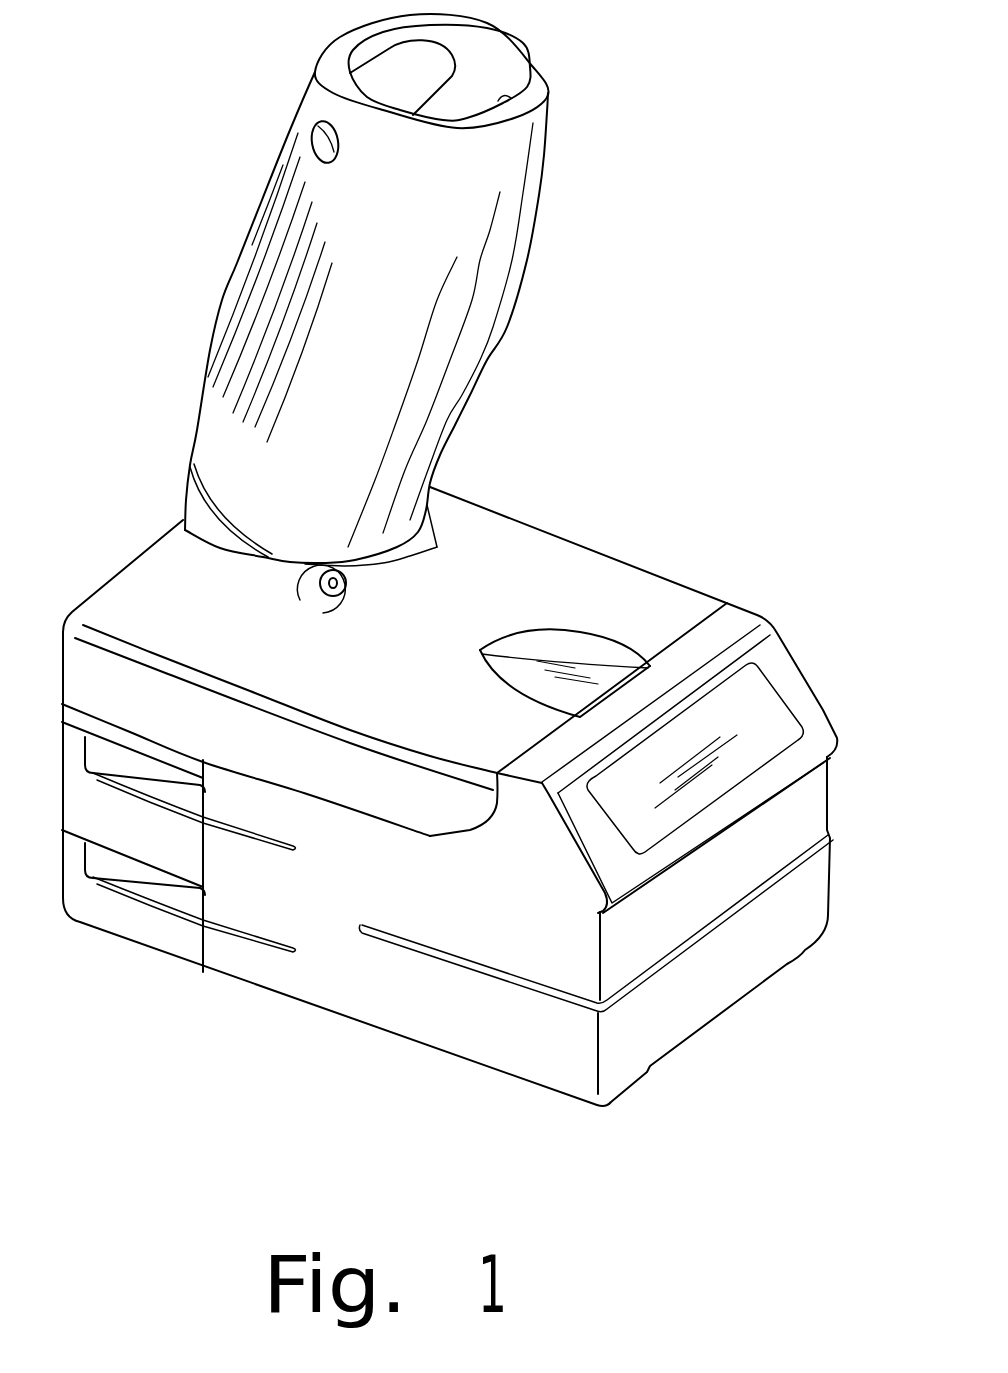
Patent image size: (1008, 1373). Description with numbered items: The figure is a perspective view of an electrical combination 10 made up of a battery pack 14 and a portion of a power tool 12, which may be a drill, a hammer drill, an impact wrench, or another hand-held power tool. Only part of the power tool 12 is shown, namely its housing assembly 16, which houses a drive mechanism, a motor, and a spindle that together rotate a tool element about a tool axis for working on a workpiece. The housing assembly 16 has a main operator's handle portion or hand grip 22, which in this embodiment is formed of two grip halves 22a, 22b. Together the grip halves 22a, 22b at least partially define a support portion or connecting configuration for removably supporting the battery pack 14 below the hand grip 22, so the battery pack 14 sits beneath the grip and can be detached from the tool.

The electrical combination 10 is at (770, 185).
The power tool 12 is at (223, 300).
The battery pack 14 is at (120, 926).
The housing assembly 16 is at (527, 56).
The hand grip 22 is at (298, 120).
The grip half 22a is at (210, 440).
The grip half 22b is at (552, 103).